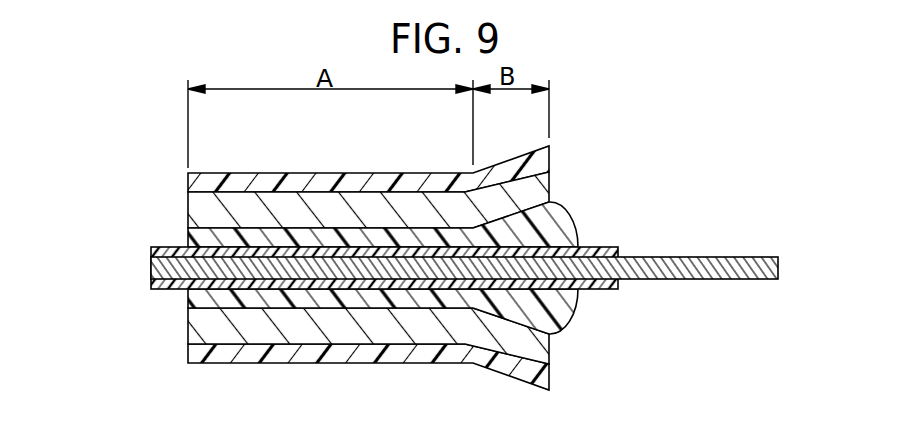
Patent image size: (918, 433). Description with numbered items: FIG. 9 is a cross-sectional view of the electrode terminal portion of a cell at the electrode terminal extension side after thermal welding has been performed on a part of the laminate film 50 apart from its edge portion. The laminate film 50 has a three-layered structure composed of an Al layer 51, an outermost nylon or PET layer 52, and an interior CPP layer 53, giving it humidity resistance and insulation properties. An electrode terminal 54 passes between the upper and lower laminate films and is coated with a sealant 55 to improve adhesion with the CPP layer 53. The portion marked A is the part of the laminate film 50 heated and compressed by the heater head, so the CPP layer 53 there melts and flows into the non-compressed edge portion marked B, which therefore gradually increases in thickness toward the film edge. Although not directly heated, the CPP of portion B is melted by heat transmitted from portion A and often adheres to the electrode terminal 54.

The laminate film 50 is at (78, 173).
The Al layer 51 is at (188, 213).
The nylon or PET layer 52 is at (188, 183).
The CPP layer 53 is at (188, 238).
The electrode terminal 54 is at (741, 272).
The sealant 55 is at (612, 282).